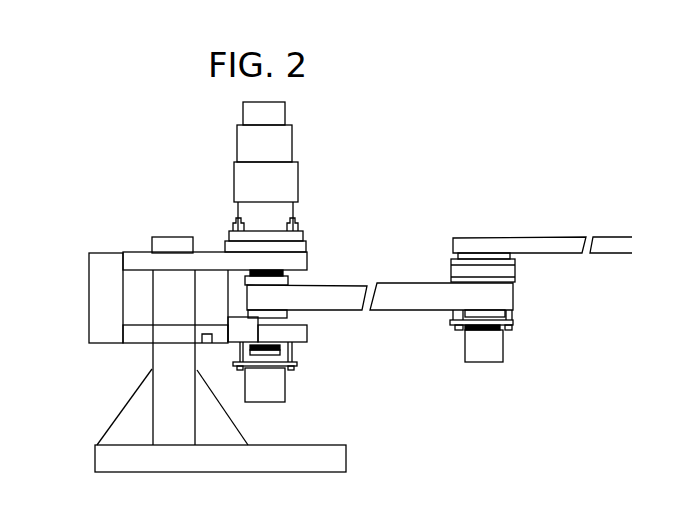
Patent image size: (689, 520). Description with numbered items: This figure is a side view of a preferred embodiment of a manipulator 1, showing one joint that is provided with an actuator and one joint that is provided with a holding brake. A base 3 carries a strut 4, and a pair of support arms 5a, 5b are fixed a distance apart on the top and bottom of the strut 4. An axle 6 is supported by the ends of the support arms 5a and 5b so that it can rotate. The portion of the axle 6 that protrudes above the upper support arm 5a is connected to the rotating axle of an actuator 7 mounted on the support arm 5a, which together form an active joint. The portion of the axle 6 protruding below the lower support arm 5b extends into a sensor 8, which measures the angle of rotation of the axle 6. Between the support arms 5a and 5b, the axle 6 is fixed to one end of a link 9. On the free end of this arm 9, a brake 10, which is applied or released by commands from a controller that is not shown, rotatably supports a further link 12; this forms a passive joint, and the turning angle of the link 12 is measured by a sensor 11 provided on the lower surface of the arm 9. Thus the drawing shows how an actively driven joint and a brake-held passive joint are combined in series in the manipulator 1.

The manipulator 1 is at (365, 182).
The base 3 is at (107, 458).
The strut 4 is at (158, 363).
The support arm 5a is at (207, 260).
The support arm 5b is at (205, 343).
The axle 6 is at (292, 275).
The actuator 7 is at (288, 185).
The sensor 8 is at (280, 390).
The link 9 is at (350, 295).
The brake 10 is at (505, 270).
The sensor 11 is at (487, 352).
The link 12 is at (525, 243).